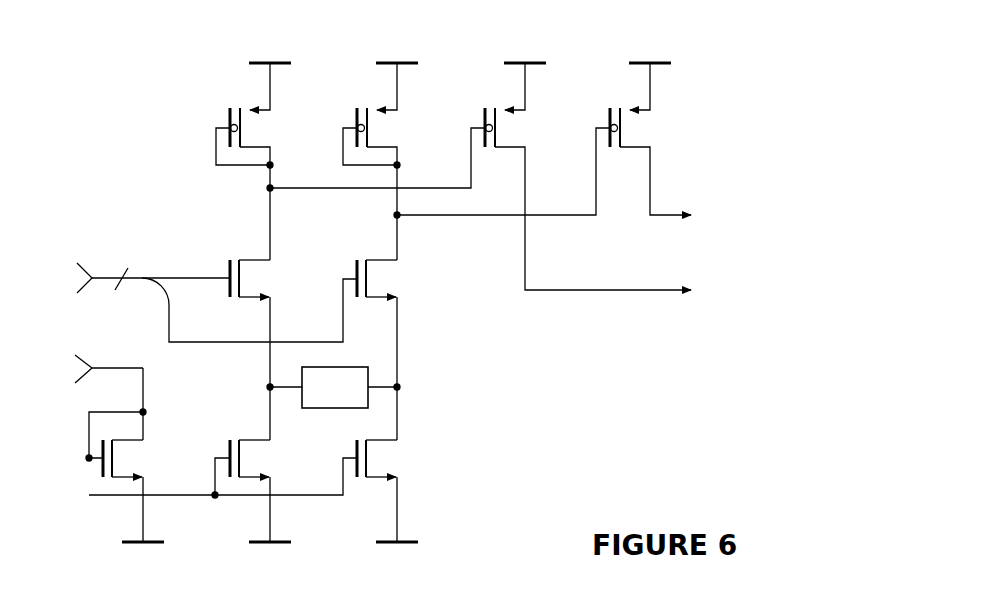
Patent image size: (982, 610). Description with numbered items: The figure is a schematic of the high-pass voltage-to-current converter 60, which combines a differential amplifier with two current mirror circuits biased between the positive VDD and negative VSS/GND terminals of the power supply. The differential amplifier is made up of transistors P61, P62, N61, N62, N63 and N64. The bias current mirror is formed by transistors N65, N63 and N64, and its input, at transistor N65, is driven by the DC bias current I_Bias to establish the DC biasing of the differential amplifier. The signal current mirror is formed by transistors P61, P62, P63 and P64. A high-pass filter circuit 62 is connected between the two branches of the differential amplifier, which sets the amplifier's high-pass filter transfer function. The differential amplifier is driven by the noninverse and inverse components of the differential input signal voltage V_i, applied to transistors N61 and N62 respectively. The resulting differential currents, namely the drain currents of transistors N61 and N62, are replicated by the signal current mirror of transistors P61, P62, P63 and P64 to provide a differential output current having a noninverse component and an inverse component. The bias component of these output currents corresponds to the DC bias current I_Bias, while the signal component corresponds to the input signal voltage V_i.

The high-pass voltage-to-current converter 60 is at (630, 440).
The high-pass filter circuit 62 is at (370, 373).
The transistor P61 is at (256, 161).
The transistor P62 is at (383, 161).
The transistor P63 is at (480, 176).
The transistor P64 is at (544, 139).
The transistor N61 is at (192, 350).
The transistor N62 is at (289, 350).
The transistor N63 is at (260, 491).
The transistor N64 is at (262, 491).
The transistor N65 is at (128, 448).